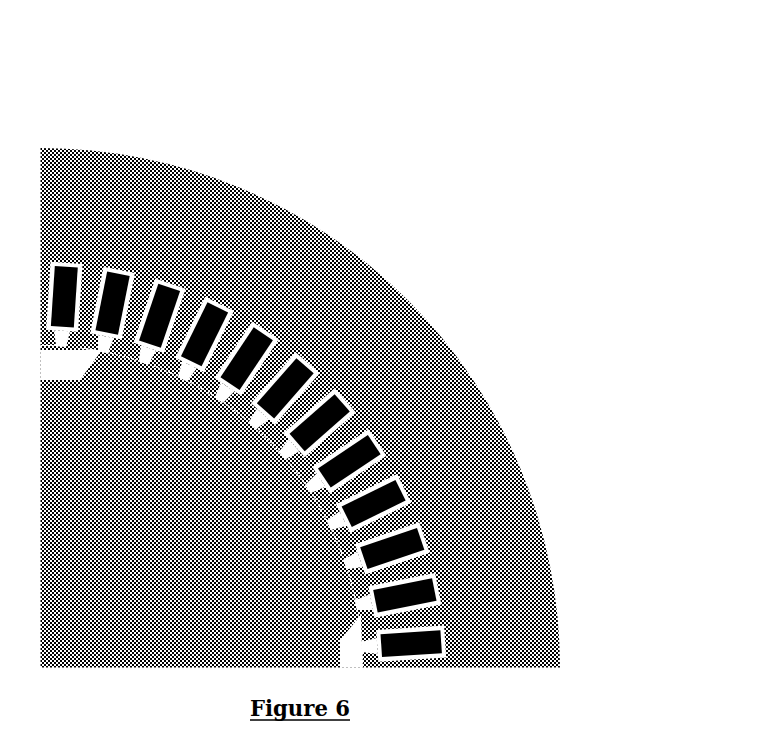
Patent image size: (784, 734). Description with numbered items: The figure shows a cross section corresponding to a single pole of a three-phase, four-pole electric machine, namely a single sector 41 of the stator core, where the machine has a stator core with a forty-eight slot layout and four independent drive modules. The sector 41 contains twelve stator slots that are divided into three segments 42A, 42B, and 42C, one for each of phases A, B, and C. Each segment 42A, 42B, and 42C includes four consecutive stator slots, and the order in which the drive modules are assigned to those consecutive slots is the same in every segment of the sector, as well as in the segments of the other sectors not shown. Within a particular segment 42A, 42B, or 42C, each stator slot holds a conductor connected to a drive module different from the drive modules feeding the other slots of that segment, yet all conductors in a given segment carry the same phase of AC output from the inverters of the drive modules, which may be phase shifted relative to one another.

The sector of the stator core 41 is at (610, 200).
The segment 42A is at (507, 535).
The segment 42B is at (165, 200).
The segment 42C is at (381, 325).